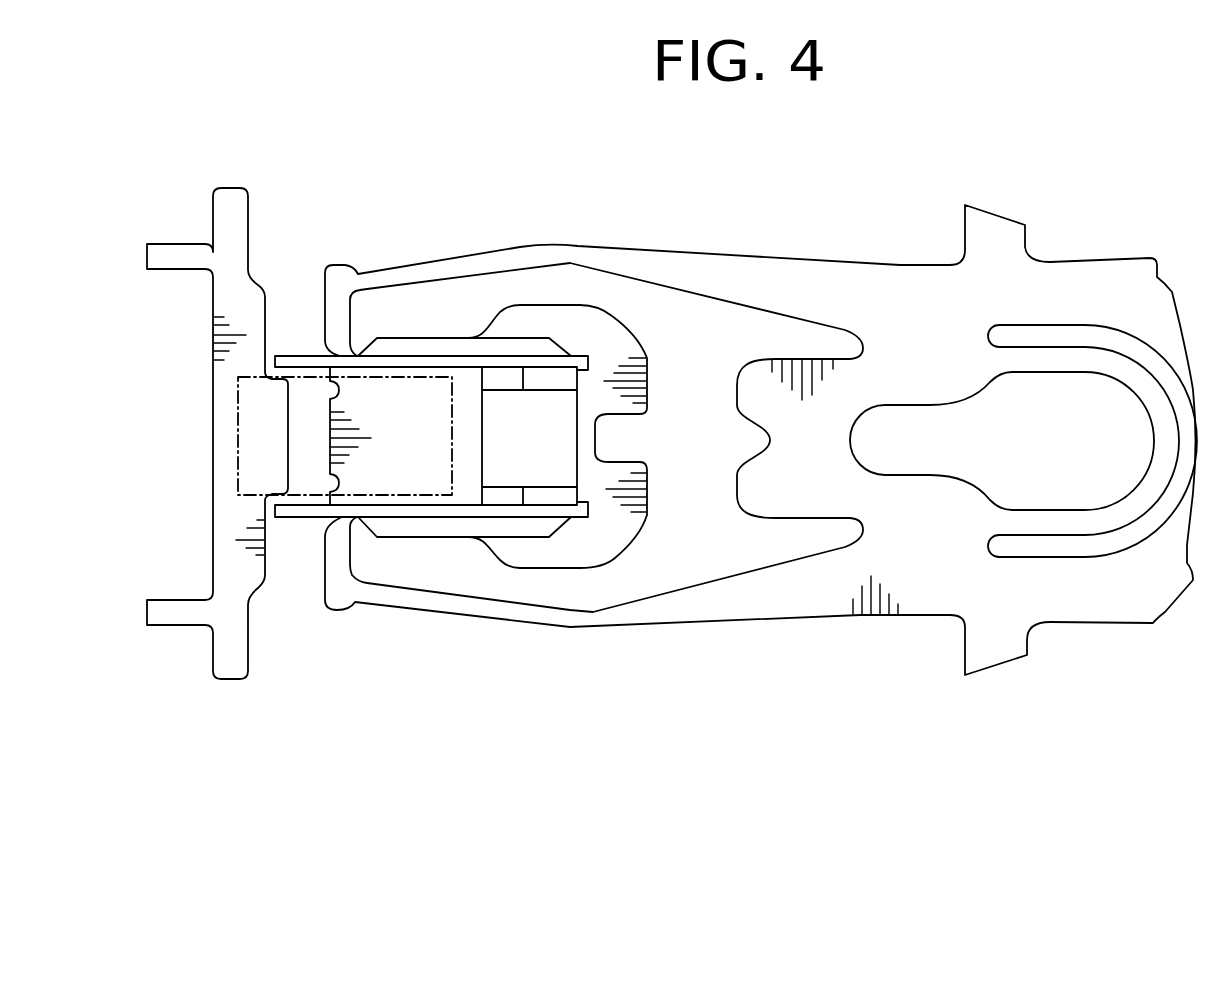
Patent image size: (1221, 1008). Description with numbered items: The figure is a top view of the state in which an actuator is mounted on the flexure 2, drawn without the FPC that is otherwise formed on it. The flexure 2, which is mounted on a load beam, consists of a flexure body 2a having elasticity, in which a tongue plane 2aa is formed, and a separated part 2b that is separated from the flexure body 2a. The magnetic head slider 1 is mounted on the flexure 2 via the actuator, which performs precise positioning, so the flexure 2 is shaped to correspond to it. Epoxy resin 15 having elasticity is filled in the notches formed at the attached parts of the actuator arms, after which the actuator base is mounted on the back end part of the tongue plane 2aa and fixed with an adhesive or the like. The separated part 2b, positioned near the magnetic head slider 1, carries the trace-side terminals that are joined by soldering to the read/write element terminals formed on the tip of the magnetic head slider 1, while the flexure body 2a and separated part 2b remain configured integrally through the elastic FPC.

The magnetic head slider 1 is at (237, 463).
The flexure 2 is at (672, 542).
The flexure body 2a is at (612, 625).
The tongue plane 2aa is at (487, 548).
The separated part 2b is at (248, 655).
The epoxy resin 15 is at (503, 378).